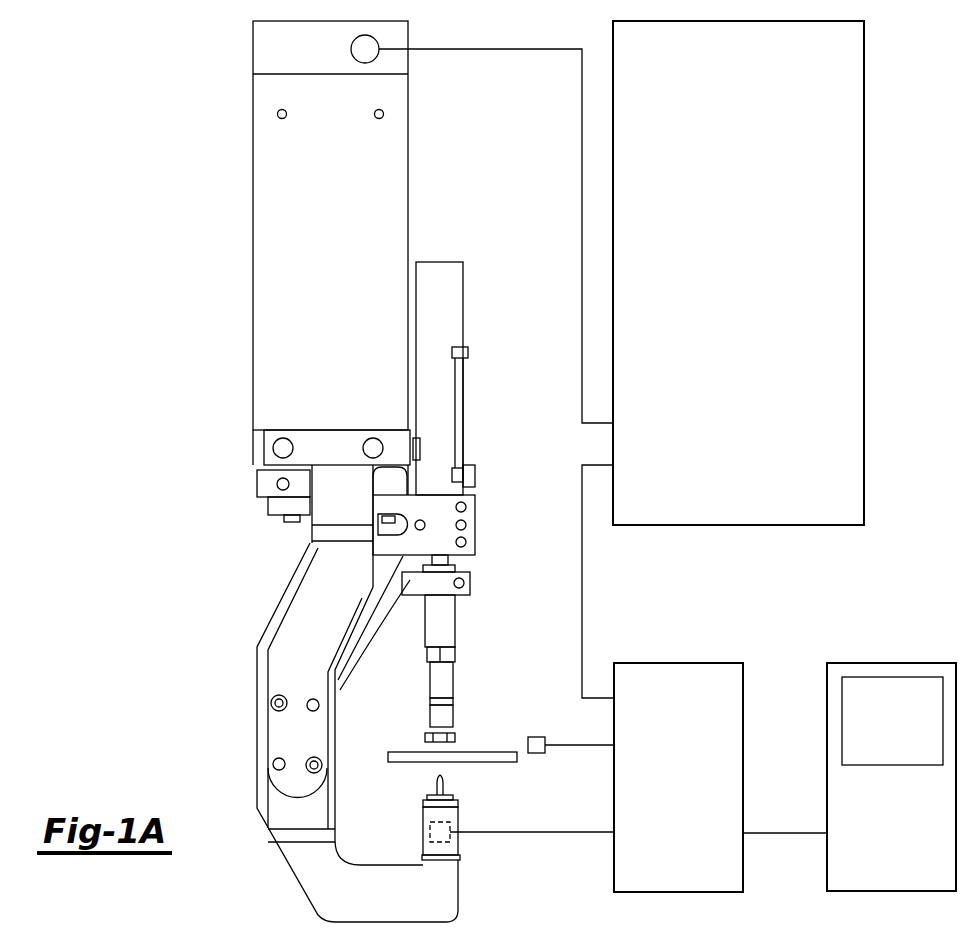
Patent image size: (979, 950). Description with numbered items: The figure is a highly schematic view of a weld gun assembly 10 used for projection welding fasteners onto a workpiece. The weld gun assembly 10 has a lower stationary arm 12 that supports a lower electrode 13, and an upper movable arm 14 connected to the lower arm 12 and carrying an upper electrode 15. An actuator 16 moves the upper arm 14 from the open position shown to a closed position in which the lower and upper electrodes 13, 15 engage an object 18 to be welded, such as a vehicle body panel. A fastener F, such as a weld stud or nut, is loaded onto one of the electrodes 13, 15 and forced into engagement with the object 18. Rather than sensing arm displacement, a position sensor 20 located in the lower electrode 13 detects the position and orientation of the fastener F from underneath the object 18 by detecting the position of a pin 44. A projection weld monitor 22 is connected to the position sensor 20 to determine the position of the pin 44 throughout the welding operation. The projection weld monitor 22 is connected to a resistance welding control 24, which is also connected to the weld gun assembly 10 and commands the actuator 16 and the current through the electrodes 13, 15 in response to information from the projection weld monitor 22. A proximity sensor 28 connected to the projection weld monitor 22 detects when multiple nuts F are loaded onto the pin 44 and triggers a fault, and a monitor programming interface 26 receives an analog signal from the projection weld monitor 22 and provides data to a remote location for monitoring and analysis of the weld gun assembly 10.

The weld gun assembly 10 is at (180, 92).
The lower stationary arm 12 is at (450, 898).
The lower electrode 13 is at (460, 815).
The upper movable arm 14 is at (447, 608).
The upper electrode 15 is at (450, 682).
The actuator 16 is at (463, 283).
The object to be welded 18 is at (403, 752).
The position sensor 20 is at (460, 836).
The projection weld monitor 22 is at (684, 790).
The resistance welding control 24 is at (746, 284).
The monitor programming interface 26 is at (899, 827).
The proximity sensor 28 is at (538, 753).
The pin 44 is at (435, 783).
The fastener F is at (458, 737).